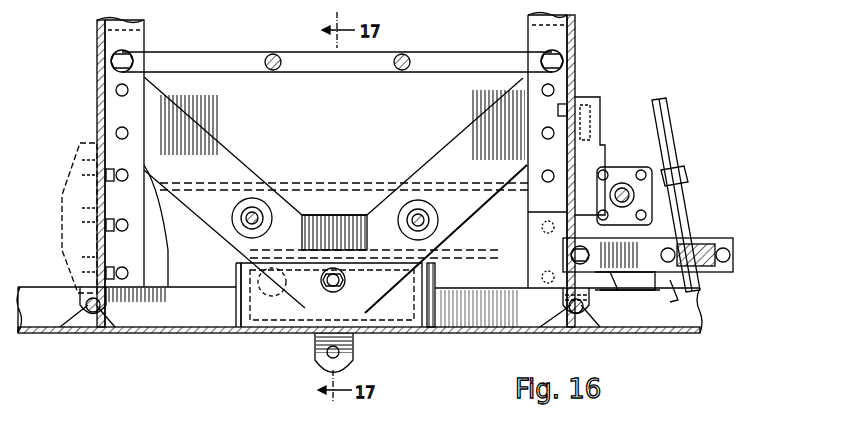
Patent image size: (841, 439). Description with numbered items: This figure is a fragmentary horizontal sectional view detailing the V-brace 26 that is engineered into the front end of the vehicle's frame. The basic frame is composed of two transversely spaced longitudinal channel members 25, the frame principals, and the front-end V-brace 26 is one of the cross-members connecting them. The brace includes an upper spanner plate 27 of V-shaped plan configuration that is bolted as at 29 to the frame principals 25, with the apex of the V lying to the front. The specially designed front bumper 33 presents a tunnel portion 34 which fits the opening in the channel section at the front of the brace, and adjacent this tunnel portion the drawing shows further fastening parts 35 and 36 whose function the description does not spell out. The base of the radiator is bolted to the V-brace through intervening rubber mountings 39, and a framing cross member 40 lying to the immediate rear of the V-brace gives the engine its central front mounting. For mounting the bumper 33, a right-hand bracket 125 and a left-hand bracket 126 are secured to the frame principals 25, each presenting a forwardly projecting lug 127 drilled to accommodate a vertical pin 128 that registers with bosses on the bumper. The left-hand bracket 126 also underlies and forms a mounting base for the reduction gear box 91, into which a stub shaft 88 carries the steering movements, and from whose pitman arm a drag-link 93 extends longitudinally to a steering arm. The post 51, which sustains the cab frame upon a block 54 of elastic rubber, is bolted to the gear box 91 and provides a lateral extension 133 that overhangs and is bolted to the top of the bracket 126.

The longitudinal channel member 25 is at (100, 25).
The front-end V-brace 26 is at (252, 156).
The upper spanner plate 27 is at (468, 134).
The bolts 29 is at (542, 132).
The front bumper 33 is at (490, 333).
The tunnel portion 34 is at (236, 274).
The pivot pin 35 is at (321, 278).
The bolt 36 is at (255, 306).
The rubber mountings 39 is at (437, 222).
The framing cross member 40 is at (234, 55).
The post 51 is at (635, 282).
The block of elastic rubber 54 is at (695, 244).
The stub shaft 88 is at (622, 186).
The reduction gear box 91 is at (628, 285).
The drag-link 93 is at (668, 122).
The right-hand bracket 125 is at (80, 165).
The left-hand bracket 126 is at (586, 97).
The lug 127 is at (85, 305).
The vertical pin 128 is at (93, 313).
The lateral extension 133 is at (570, 252).